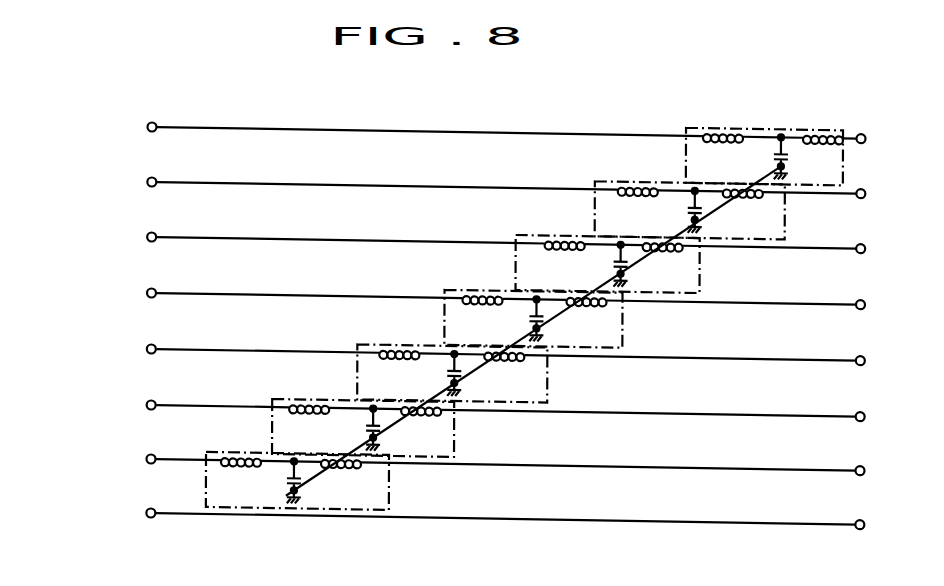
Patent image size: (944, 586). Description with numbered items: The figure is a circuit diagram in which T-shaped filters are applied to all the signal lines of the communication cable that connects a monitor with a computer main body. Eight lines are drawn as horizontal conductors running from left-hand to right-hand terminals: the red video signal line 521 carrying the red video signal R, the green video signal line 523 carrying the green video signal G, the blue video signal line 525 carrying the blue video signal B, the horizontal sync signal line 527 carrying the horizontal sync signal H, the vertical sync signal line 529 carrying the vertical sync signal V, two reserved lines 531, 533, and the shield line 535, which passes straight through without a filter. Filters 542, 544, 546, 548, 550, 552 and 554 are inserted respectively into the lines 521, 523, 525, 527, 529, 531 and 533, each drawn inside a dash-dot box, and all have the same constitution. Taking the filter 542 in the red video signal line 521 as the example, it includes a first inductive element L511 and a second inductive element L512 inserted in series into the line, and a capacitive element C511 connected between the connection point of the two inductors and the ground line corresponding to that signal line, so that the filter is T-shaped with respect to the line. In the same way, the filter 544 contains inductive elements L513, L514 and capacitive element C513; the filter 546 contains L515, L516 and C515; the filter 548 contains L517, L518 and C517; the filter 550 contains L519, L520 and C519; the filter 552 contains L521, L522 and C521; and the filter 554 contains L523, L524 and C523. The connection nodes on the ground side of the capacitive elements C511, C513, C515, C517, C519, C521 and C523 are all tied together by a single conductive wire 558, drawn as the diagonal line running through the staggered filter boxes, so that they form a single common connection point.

The red video signal line 521 is at (495, 124).
The green video signal line 523 is at (493, 179).
The blue video signal line 525 is at (494, 234).
The horizontal sync signal line 527 is at (493, 290).
The vertical sync signal line 529 is at (494, 346).
The reserved line 531 is at (447, 401).
The reserved line 533 is at (447, 455).
The shield line 535 is at (456, 509).
The filter 542 is at (722, 119).
The filter 544 is at (640, 174).
The filter 546 is at (560, 229).
The filter 548 is at (500, 285).
The filter 550 is at (420, 341).
The filter 552 is at (345, 397).
The filter 554 is at (262, 451).
The conductive wire 558 is at (474, 366).
The first inductive element L511 is at (730, 158).
The second inductive element L512 is at (830, 160).
The inductive element L513 is at (645, 212).
The inductive element L514 is at (750, 213).
The inductive element L515 is at (572, 265).
The inductive element L516 is at (670, 267).
The inductive element L517 is at (489, 320).
The inductive element L518 is at (593, 322).
The inductive element L519 is at (406, 375).
The inductive element L520 is at (511, 376).
The inductive element L521 is at (316, 429).
The inductive element L522 is at (428, 431).
The inductive element L523 is at (248, 482).
The inductive element L524 is at (348, 484).
The capacitive element C511 is at (810, 182).
The capacitive element C513 is at (724, 236).
The capacitive element C515 is at (649, 290).
The capacitive element C517 is at (565, 344).
The capacitive element C519 is at (483, 399).
The capacitive element C521 is at (402, 454).
The capacitive element C523 is at (323, 506).